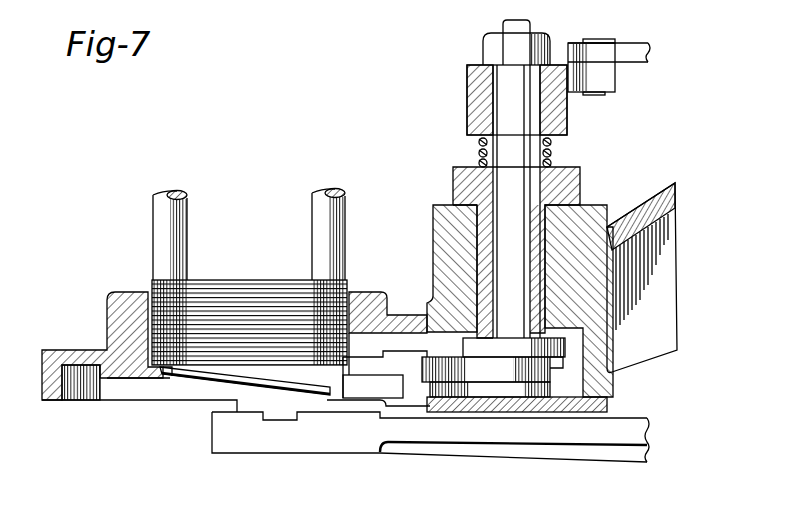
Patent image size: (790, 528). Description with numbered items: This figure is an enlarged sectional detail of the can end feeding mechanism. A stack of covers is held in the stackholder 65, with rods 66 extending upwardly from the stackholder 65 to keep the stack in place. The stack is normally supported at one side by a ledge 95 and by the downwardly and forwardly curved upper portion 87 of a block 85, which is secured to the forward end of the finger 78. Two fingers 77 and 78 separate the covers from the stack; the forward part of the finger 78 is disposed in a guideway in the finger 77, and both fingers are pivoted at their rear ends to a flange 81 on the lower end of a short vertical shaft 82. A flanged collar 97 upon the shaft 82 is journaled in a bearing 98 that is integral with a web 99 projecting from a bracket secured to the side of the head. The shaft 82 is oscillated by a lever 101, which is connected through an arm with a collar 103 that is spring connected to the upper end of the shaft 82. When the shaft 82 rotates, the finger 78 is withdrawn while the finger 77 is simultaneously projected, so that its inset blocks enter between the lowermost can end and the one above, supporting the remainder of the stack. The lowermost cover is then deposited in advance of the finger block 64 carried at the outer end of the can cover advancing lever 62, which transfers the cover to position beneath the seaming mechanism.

The can cover advancing lever 62 is at (538, 432).
The finger block 64 is at (237, 402).
The stackholder 65 is at (118, 292).
The rods 66 is at (315, 248).
The finger 77 is at (432, 390).
The finger 78 is at (402, 367).
The flange 81 is at (547, 343).
The short vertical shaft 82 is at (523, 203).
The block 85 is at (372, 297).
The downwardly and forwardly curved upper portion 87 is at (322, 384).
The ledge 95 is at (147, 378).
The flanged collar 97 is at (556, 250).
The bearing 98 is at (447, 218).
The web 99 is at (660, 325).
The lever 101 is at (628, 53).
The collar 103 is at (553, 117).